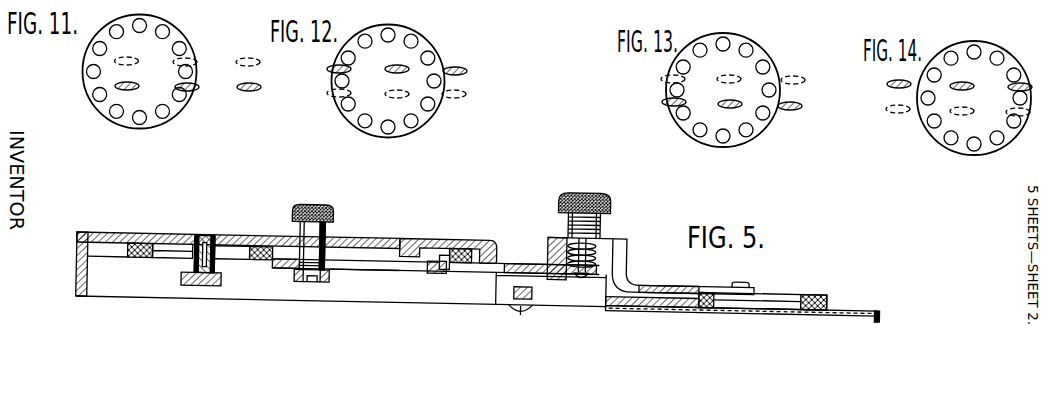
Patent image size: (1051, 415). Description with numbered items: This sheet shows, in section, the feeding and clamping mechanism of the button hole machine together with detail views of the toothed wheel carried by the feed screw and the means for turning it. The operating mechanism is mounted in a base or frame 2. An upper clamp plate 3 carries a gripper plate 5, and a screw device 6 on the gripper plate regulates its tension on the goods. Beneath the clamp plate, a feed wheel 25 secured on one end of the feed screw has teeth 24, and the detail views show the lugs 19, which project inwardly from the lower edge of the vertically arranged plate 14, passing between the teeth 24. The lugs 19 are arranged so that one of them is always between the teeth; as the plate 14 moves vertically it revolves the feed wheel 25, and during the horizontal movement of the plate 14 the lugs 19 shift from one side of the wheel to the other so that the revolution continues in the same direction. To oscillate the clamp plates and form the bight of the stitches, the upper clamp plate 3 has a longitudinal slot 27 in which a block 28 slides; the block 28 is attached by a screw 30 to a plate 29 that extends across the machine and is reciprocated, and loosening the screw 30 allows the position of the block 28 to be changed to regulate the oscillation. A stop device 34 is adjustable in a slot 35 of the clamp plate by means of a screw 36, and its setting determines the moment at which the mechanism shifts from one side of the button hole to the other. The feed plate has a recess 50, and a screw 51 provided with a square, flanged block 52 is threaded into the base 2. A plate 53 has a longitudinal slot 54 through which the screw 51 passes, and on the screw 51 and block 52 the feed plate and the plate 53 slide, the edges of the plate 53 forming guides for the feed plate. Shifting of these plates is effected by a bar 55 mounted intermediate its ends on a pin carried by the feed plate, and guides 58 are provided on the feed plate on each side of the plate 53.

In FIG. 5, the base or frame 2 is at (418, 240).
In FIG. 5, the upper clamp plate 3 is at (556, 268).
In FIG. 5, the gripper plate 5 is at (628, 266).
In FIG. 5, the screw device 6 is at (611, 197).
In FIG. 5, the vertically arranged plate 14 is at (625, 296).
In FIG. 11, the lugs 19 is at (134, 83).
In FIG. 12, the lugs 19 is at (347, 72).
In FIG. 13, the lugs 19 is at (667, 103).
In FIG. 14, the lugs 19 is at (890, 86).
In FIG. 11, the teeth 24 is at (132, 123).
In FIG. 12, the teeth 24 is at (375, 133).
In FIG. 13, the teeth 24 is at (717, 143).
In FIG. 14, the teeth 24 is at (965, 153).
In FIG. 11, the feed wheel 25 is at (152, 126).
In FIG. 12, the feed wheel 25 is at (397, 132).
In FIG. 13, the feed wheel 25 is at (735, 140).
In FIG. 14, the feed wheel 25 is at (985, 152).
In FIG. 5, the longitudinal slot 27 is at (390, 265).
In FIG. 5, the block 28 is at (452, 266).
In FIG. 5, the plate 29 is at (471, 244).
In FIG. 5, the screw 30 is at (443, 263).
In FIG. 5, the stop device 34 is at (317, 278).
In FIG. 5, the slot 35 is at (347, 265).
In FIG. 5, the screw 36 is at (333, 212).
In FIG. 5, the recess 50 is at (290, 242).
In FIG. 5, the screw 51 is at (230, 242).
In FIG. 5, the square, flanged block 52 is at (200, 240).
In FIG. 5, the plate 53 is at (143, 241).
In FIG. 5, the longitudinal slot 54 is at (169, 242).
In FIG. 5, the bar 55 is at (183, 279).
In FIG. 5, the guides 58 is at (130, 257).